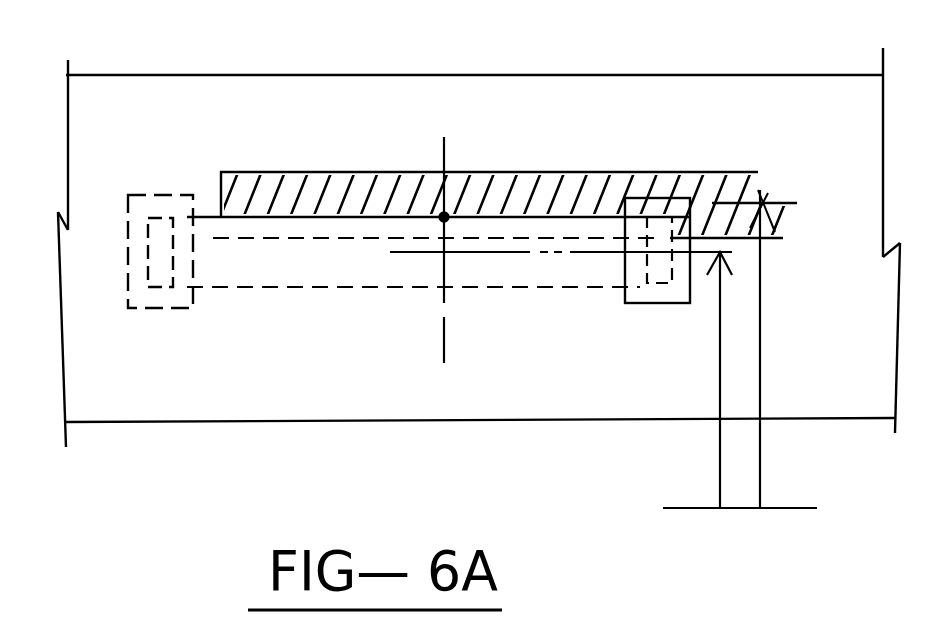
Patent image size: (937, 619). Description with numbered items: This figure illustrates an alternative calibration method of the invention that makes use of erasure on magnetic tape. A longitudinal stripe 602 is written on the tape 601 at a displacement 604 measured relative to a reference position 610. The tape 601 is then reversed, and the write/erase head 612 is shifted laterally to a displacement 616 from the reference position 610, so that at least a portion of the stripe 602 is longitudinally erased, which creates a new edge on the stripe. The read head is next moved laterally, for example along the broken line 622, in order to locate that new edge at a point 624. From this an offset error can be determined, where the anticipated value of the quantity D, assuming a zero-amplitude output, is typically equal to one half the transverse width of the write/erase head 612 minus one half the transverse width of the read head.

The tape 601 is at (463, 90).
The longitudinal stripe 602 is at (512, 192).
The displacement 604 is at (762, 395).
The reference position 610 is at (788, 508).
The write/erase head 612 is at (658, 320).
The displacement 616 is at (720, 437).
The broken line 622 is at (443, 332).
The point 624 is at (444, 217).